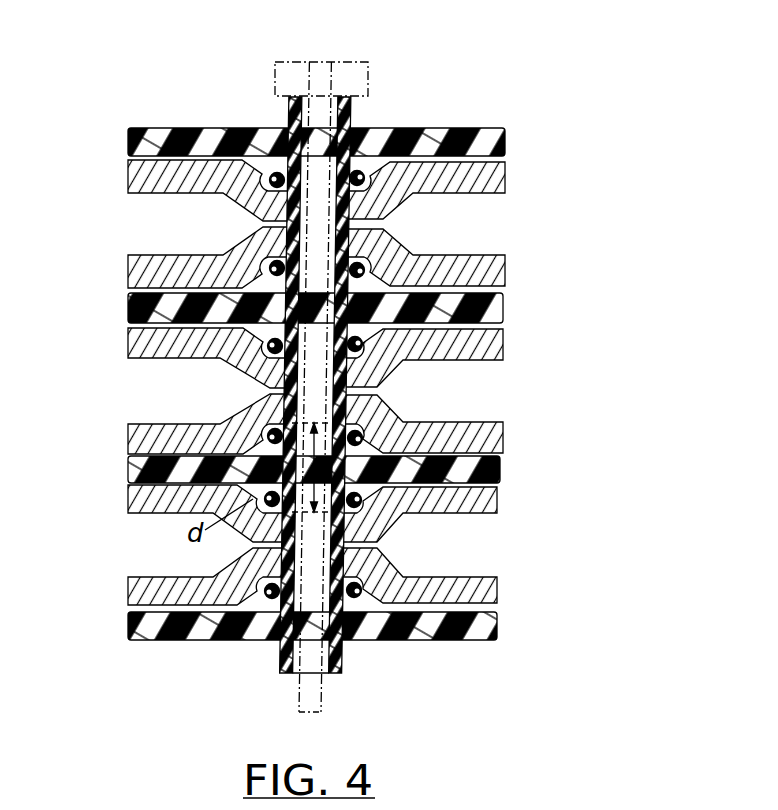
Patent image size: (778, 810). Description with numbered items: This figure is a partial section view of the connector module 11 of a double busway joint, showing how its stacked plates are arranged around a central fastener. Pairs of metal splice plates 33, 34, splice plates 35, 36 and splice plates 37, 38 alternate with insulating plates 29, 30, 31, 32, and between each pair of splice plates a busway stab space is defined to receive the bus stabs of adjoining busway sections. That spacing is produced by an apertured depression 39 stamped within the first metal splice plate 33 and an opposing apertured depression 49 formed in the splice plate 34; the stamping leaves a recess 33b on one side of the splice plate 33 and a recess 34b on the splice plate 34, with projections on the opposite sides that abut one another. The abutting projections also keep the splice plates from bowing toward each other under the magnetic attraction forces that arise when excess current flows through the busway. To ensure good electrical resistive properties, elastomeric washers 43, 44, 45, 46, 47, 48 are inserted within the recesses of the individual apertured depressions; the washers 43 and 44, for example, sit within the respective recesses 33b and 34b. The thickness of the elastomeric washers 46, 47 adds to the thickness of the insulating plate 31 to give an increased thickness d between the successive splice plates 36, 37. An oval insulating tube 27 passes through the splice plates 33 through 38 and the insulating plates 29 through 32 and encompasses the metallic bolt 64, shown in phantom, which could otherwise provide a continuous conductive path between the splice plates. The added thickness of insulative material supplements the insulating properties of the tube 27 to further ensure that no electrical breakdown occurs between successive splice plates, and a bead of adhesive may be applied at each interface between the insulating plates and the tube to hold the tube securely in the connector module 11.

The connector module 11 is at (712, 383).
The insulating tube 27 is at (352, 108).
The insulating plate 29 is at (127, 145).
The insulating plate 30 is at (127, 307).
The insulating plate 31 is at (127, 468).
The insulating plate 32 is at (127, 627).
The first metal splice plate 33 is at (508, 178).
The recess 33b is at (384, 170).
The splice plate 34 is at (506, 267).
The recess 34b is at (376, 231).
The splice plate 35 is at (505, 343).
The splice plate 36 is at (505, 435).
The splice plate 37 is at (500, 502).
The splice plate 38 is at (500, 590).
The apertured depression 39 is at (210, 208).
The elastomeric washer 43 is at (364, 170).
The elastomeric washer 44 is at (364, 266).
The elastomeric washer 45 is at (356, 337).
The elastomeric washer 46 is at (353, 437).
The elastomeric washer 47 is at (365, 500).
The elastomeric washer 48 is at (366, 588).
The apertured depression 49 is at (216, 243).
The metallic bolt 64 is at (368, 62).